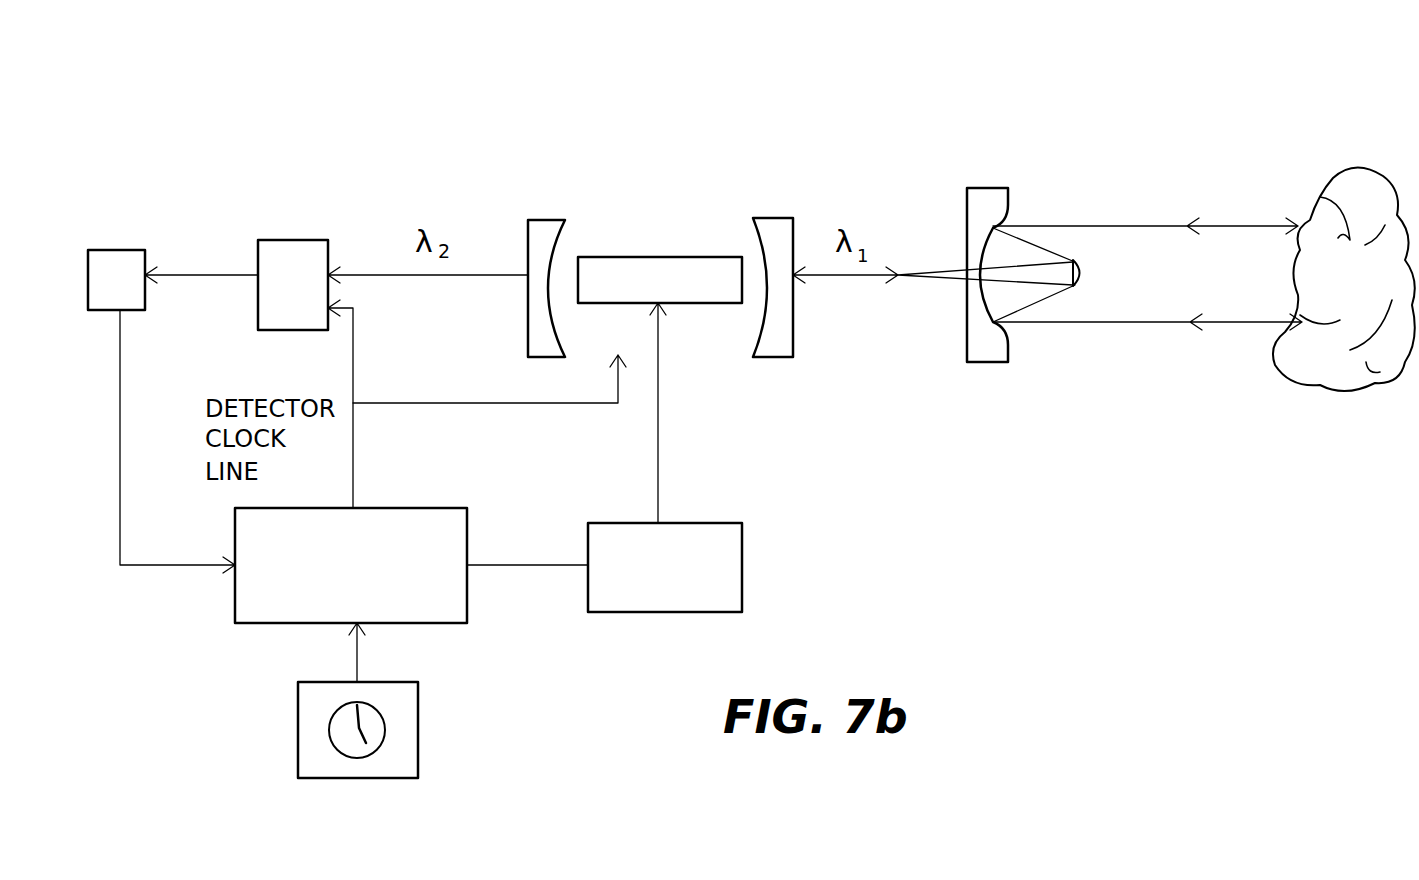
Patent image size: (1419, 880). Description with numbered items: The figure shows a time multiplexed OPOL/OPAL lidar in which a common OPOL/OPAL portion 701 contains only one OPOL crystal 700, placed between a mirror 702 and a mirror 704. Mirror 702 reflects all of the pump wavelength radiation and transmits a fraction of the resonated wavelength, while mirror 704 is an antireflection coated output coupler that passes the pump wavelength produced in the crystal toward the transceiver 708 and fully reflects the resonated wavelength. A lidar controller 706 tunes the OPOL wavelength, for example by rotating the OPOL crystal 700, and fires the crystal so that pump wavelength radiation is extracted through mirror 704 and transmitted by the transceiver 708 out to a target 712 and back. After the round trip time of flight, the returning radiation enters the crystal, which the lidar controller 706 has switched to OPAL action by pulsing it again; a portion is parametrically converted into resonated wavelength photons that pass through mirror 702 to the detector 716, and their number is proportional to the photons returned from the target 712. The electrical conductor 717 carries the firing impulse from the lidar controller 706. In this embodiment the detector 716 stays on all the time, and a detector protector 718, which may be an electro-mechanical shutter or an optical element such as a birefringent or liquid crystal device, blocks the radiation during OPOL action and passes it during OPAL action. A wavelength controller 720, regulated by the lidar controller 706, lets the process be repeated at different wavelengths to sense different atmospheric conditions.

The OPOL crystal 700 is at (648, 257).
The OPOL/OPAL portion 701 is at (699, 112).
The mirror 702 is at (545, 218).
The mirror 704 is at (782, 214).
The lidar controller 706 is at (468, 613).
The transceiver 708 is at (985, 188).
The target 712 is at (1340, 172).
The detector 716 is at (128, 217).
The electrical conductor 717 is at (353, 336).
The detector protector 718 is at (290, 165).
The λ-controller 720 is at (742, 565).